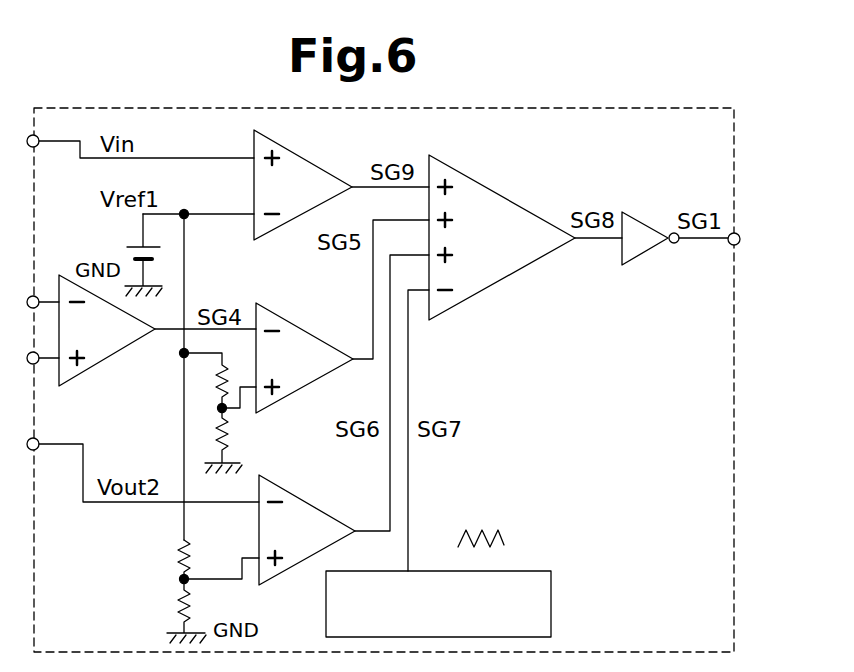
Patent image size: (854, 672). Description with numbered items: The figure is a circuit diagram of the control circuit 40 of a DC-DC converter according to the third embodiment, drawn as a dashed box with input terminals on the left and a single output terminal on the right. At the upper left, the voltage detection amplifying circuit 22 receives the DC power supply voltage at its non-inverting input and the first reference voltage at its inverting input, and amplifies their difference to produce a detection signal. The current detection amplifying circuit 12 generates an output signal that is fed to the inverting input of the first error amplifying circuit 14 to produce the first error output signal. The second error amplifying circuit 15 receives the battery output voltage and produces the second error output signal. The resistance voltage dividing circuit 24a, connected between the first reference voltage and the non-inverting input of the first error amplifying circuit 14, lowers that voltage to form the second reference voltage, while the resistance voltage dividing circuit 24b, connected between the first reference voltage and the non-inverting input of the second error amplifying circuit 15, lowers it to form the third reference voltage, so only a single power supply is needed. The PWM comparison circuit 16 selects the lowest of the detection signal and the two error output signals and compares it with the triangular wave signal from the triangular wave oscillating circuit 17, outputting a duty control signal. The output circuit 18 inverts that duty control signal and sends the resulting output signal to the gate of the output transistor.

The current detection amplifying circuit 12 is at (130, 348).
The first error amplifying circuit 14 is at (320, 343).
The second error amplifying circuit 15 is at (322, 512).
The PWM comparison circuit 16 is at (503, 197).
The triangular wave oscillating circuit 17 is at (553, 593).
The output circuit 18 is at (645, 225).
The voltage detection amplifying circuit 22 is at (320, 168).
The resistance voltage dividing circuit 24a is at (215, 388).
The resistance voltage dividing circuit 24b is at (182, 547).
The control circuit 40 is at (734, 183).